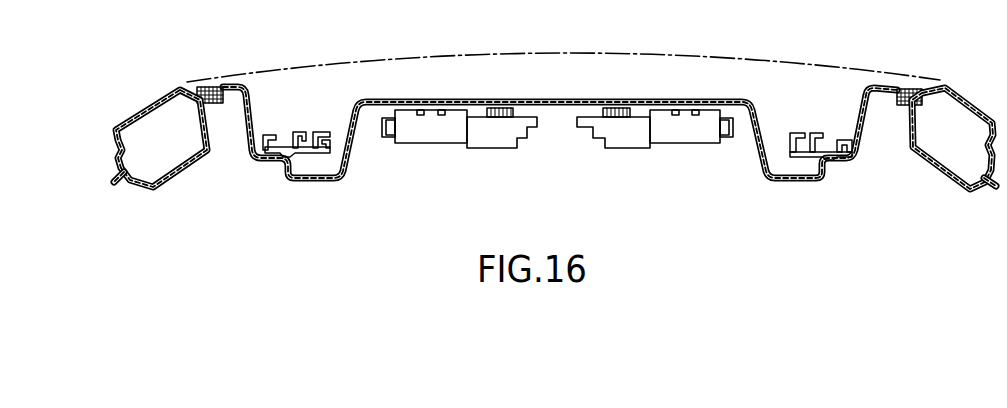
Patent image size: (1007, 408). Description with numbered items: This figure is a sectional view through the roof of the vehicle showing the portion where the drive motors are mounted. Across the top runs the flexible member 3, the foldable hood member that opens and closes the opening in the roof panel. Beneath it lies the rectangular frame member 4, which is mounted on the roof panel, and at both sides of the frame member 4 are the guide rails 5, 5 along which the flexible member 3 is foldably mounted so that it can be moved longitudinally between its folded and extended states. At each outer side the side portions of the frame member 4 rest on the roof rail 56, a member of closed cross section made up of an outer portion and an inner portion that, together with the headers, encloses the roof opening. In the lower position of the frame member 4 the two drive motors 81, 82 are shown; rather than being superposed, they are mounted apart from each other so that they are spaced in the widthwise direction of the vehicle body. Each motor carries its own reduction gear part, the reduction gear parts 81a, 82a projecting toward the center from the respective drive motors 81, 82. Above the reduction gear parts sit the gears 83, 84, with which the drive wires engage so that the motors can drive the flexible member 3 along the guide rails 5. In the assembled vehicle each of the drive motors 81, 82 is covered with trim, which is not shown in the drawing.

The flexible member 3 is at (581, 56).
The frame member 4 is at (773, 186).
The guide rail 5 is at (309, 132).
The roof rail 56 is at (170, 184).
The drive motor 81 is at (417, 147).
The reduction gear part 81a is at (488, 148).
The drive motor 82 is at (695, 143).
The reduction gear part 82a is at (615, 148).
The gear 83 is at (513, 107).
The gear 84 is at (628, 107).